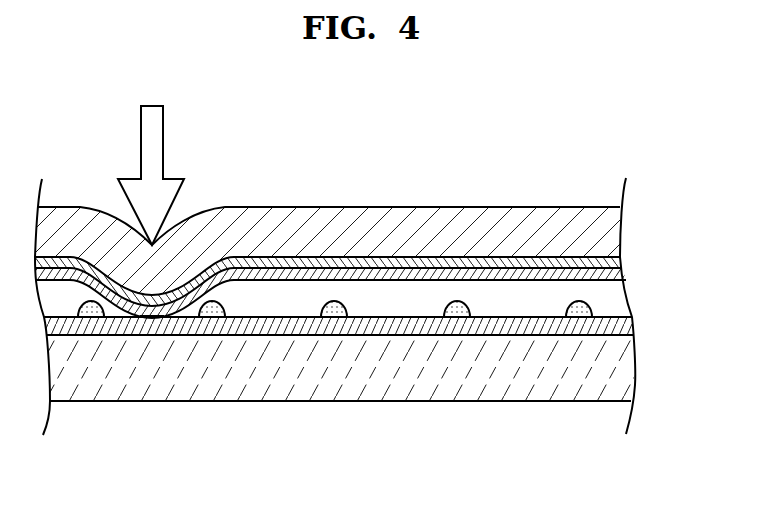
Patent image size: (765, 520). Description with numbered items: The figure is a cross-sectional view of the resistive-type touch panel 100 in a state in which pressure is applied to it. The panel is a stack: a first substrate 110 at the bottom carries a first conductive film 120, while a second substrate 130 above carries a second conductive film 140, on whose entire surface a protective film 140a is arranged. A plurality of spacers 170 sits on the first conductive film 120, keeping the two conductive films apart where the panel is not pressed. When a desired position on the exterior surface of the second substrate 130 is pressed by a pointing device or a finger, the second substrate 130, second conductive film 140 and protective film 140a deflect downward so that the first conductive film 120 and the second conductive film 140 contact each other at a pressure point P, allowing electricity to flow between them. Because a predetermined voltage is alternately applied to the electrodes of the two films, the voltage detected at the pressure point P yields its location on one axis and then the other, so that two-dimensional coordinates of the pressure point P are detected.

The touch panel 100 is at (588, 157).
The first substrate 110 is at (626, 370).
The first conductive film 120 is at (630, 328).
The second substrate 130 is at (613, 233).
The second conductive film 140 is at (613, 262).
The protective film 140a is at (615, 274).
The spacers 170 is at (334, 306).
The pressure point P is at (147, 318).